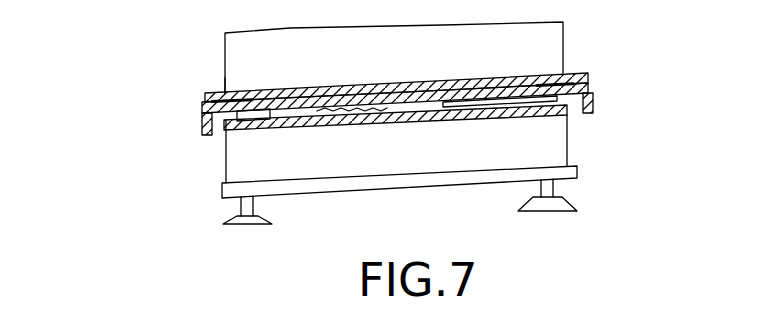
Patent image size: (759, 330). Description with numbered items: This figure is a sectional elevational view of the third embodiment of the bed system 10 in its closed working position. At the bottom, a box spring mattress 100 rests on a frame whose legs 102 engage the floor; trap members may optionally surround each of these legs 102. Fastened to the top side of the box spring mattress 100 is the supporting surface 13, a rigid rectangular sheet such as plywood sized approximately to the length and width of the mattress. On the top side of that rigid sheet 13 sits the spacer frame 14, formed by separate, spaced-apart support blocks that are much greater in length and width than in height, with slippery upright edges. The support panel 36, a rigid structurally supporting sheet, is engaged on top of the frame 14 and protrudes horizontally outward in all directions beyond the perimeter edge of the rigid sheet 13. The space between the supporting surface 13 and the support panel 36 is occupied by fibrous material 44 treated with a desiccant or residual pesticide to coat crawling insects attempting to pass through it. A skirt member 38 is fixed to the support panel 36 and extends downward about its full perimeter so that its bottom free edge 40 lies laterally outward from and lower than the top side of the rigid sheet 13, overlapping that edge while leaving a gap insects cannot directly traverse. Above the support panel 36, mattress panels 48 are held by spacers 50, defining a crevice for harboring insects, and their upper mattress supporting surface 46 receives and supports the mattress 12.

The bed system 10 is at (96, 110).
The mattress 12 is at (563, 45).
The supporting surface 13 is at (253, 123).
The spacer frame 14 is at (398, 108).
The support panel 36 is at (593, 88).
The skirt member 38 is at (593, 103).
The bottom free edge 40 is at (588, 113).
The fibrous material 44 is at (478, 116).
The mattress supporting surface 46 is at (248, 92).
The mattress panels 48 is at (205, 94).
The spacers 50 is at (230, 90).
The box spring mattress 100 is at (568, 150).
The legs 102 is at (556, 188).